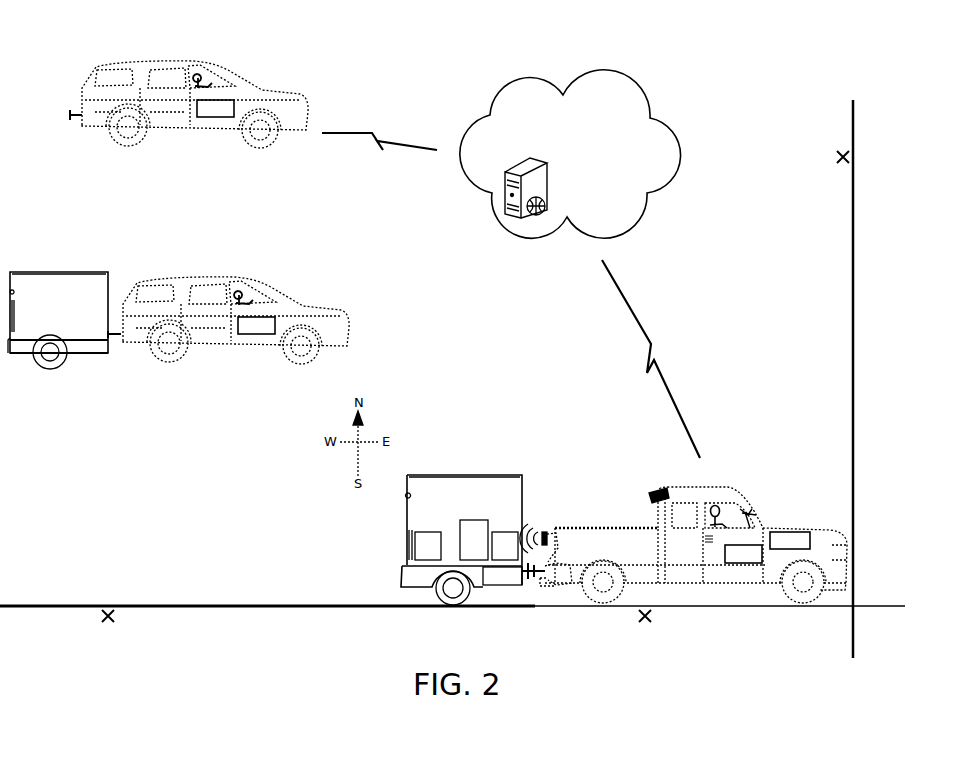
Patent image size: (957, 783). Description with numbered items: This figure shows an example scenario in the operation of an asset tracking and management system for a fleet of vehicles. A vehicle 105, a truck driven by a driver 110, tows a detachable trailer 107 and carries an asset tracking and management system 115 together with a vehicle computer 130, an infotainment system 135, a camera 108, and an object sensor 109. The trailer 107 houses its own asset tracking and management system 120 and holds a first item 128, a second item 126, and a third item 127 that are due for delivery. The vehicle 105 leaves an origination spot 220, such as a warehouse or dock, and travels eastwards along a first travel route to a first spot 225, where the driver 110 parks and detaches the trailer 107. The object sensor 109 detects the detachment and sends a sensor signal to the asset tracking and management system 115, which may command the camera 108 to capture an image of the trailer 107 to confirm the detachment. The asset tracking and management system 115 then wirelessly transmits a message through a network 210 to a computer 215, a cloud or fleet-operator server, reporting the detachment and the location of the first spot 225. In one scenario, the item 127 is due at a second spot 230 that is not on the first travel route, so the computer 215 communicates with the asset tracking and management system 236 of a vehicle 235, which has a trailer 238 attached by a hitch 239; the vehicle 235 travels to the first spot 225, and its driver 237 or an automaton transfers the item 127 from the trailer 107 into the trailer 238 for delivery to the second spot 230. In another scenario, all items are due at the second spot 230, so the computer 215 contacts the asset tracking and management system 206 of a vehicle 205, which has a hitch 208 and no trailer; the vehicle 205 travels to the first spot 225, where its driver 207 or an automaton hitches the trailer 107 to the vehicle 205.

The vehicle 105 is at (742, 470).
The trailer 107 is at (521, 466).
The camera 108 is at (673, 492).
The object sensor 109 is at (548, 527).
The driver 110 is at (726, 515).
The asset tracking and management system 115 is at (743, 554).
The asset tracking and management system 120 is at (502, 576).
The second item 126 is at (474, 540).
The third item 127 is at (505, 546).
The first item 128 is at (428, 546).
The vehicle computer 130 is at (790, 540).
The infotainment system 135 is at (753, 512).
The vehicle 205 is at (297, 83).
The asset tracking and management system 206 is at (215, 108).
The driver 207 is at (206, 77).
The hitch 208 is at (73, 124).
The network 210 is at (570, 154).
The computer 215 is at (505, 169).
The origination spot 220 is at (118, 620).
The first spot 225 is at (655, 620).
The second spot 230 is at (832, 156).
The vehicle 235 is at (327, 290).
The asset tracking and management system 236 is at (256, 325).
The driver 237 is at (246, 294).
The trailer 238 is at (111, 265).
The hitch 239 is at (113, 346).